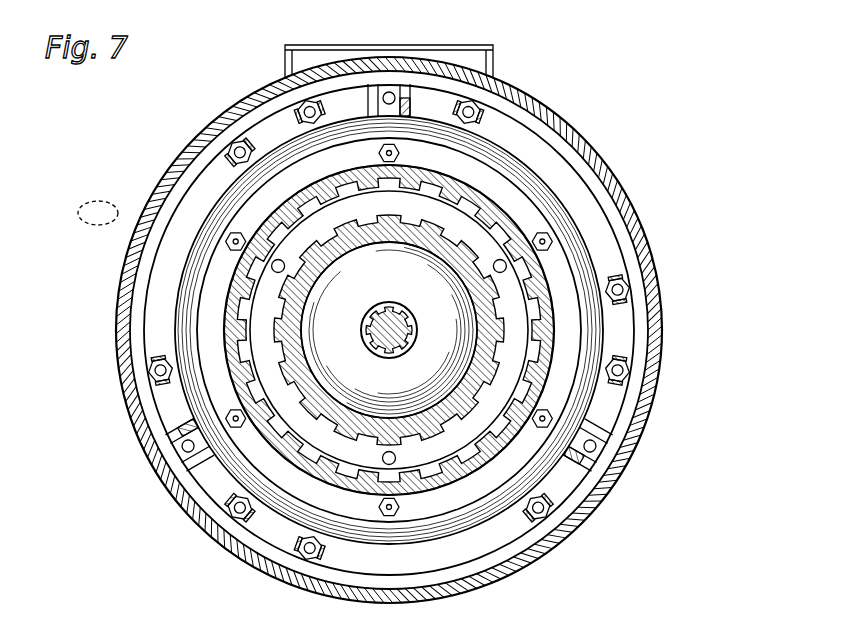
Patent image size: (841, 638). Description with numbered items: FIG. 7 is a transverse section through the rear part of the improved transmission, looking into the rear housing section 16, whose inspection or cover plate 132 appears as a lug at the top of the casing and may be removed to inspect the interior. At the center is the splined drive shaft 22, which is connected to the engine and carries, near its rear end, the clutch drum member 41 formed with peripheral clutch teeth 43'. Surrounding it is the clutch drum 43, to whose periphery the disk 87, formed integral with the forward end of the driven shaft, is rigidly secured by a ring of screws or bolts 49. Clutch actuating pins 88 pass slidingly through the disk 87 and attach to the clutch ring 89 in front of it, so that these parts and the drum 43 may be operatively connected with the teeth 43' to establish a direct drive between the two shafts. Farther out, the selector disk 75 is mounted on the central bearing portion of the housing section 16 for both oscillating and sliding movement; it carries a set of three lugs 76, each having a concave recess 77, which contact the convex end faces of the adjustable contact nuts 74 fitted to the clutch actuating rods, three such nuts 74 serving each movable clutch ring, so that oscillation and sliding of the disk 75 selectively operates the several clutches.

The rear housing section 16 is at (633, 239).
The drive shaft 22 is at (396, 318).
The clutch drum member 41 is at (466, 251).
The clutch drum 43 is at (350, 304).
The clutch teeth 43' is at (389, 320).
The screws or bolts 49 is at (548, 236).
The contact nuts 74 is at (150, 368).
The selector disk 75 is at (626, 293).
The lugs 76 is at (408, 86).
The concave recesses 77 is at (389, 92).
The disk 87 is at (389, 330).
The clutch actuating pins 88 is at (247, 268).
The clutch ring 89 is at (262, 223).
The inspection or cover plate 132 is at (347, 47).